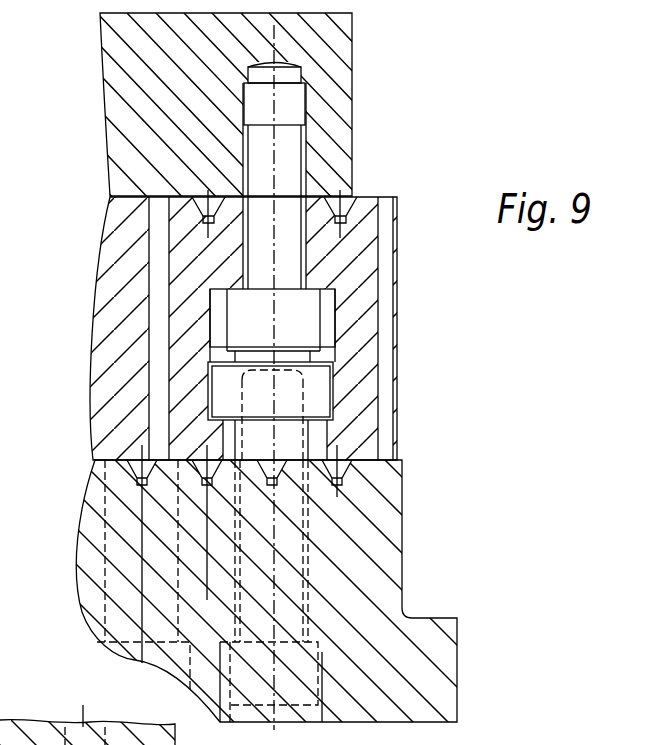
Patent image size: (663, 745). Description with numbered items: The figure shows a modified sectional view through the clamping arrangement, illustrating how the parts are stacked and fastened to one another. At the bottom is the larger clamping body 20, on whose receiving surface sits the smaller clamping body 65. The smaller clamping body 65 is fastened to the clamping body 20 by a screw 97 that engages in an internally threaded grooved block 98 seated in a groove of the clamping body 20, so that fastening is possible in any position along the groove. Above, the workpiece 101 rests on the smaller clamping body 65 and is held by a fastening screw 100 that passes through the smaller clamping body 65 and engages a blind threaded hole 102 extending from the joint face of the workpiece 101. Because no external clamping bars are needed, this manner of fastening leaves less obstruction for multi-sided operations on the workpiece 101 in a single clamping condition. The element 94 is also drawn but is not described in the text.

The clamping body 20 is at (366, 549).
The smaller clamping body 65 is at (356, 273).
The hidden boss 94 is at (271, 693).
The screw 97 is at (283, 435).
The internally threaded grooved block 98 is at (318, 382).
The fastening screw 100 is at (283, 170).
The workpiece 101 is at (332, 125).
The blind threaded hole 102 is at (287, 100).